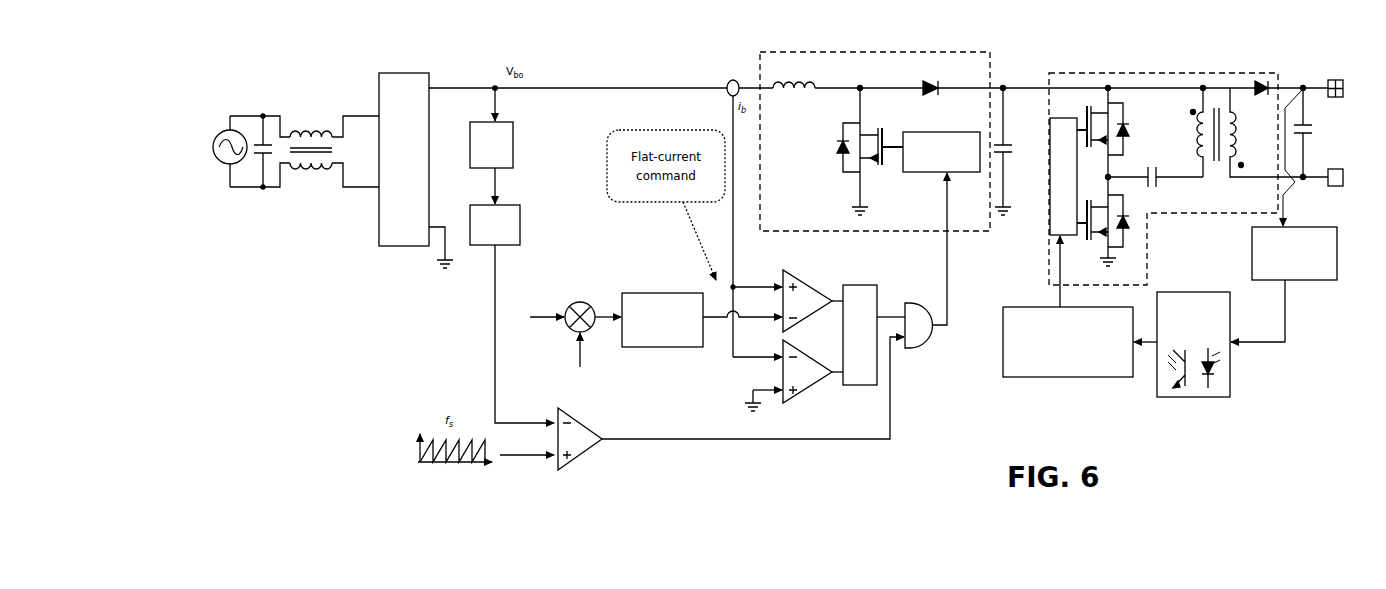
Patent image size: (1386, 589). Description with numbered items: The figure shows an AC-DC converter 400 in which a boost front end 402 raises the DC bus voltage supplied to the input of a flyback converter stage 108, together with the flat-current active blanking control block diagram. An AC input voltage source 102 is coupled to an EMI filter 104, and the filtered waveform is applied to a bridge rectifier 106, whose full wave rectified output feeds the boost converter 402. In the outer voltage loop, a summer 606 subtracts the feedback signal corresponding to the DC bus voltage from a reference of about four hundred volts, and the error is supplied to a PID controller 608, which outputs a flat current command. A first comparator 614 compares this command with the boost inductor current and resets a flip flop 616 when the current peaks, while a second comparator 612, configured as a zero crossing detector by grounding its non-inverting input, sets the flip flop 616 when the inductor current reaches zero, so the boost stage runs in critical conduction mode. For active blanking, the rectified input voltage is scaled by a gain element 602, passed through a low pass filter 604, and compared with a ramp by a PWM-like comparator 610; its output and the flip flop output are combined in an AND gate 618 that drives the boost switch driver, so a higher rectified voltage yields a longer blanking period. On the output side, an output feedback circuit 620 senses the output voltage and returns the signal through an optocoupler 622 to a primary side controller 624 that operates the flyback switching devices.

The AC input voltage source 102 is at (223, 163).
The EMI filter 104 is at (311, 128).
The bridge rectifier 106 is at (398, 73).
The flyback converter stage 108 is at (1249, 73).
The AC-DC converter 400 is at (628, 58).
The boost front end 402 is at (963, 52).
The gain element 602 is at (513, 127).
The low pass filter 604 is at (513, 205).
The summer 606 is at (593, 297).
The PID controller 608 is at (688, 347).
The comparator 610 is at (590, 458).
The second comparator 612 is at (803, 397).
The first comparator 614 is at (813, 288).
The flip flop 616 is at (857, 285).
The AND gate 618 is at (908, 348).
The output feedback circuit 620 is at (1315, 280).
The opto-coupler 622 is at (1218, 397).
The controller 624 is at (1065, 377).